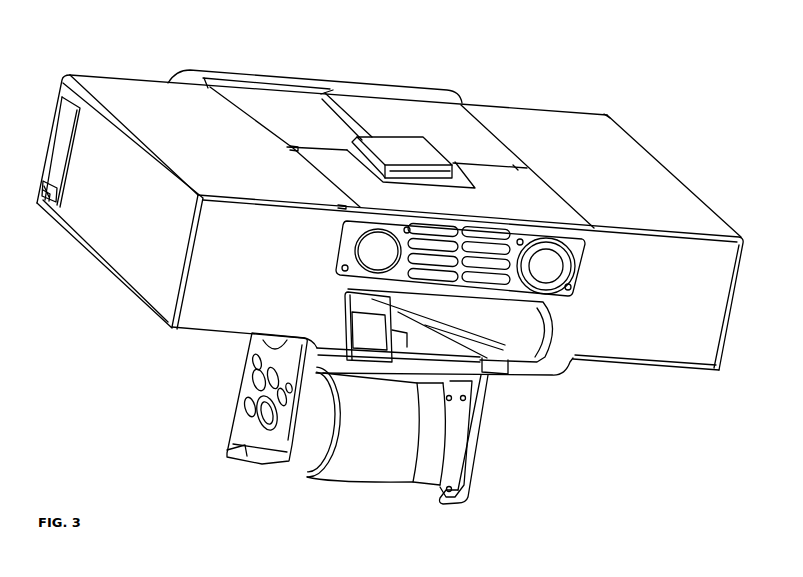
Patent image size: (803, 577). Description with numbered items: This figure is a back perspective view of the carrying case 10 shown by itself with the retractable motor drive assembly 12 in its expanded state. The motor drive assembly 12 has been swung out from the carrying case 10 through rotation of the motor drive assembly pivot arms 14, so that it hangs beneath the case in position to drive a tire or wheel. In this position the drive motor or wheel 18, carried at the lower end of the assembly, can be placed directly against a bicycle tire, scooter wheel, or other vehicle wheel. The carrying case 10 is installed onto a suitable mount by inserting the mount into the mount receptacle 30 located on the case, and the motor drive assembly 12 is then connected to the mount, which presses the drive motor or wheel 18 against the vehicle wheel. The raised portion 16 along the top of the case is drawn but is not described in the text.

The carrying case 10 is at (500, 103).
The retractable motor drive assembly 12 is at (255, 378).
The motor drive assembly pivot arms 14 is at (253, 343).
The rim 16 is at (257, 72).
The drive motor or wheel 18 is at (315, 478).
The mount receptacle 30 is at (478, 320).